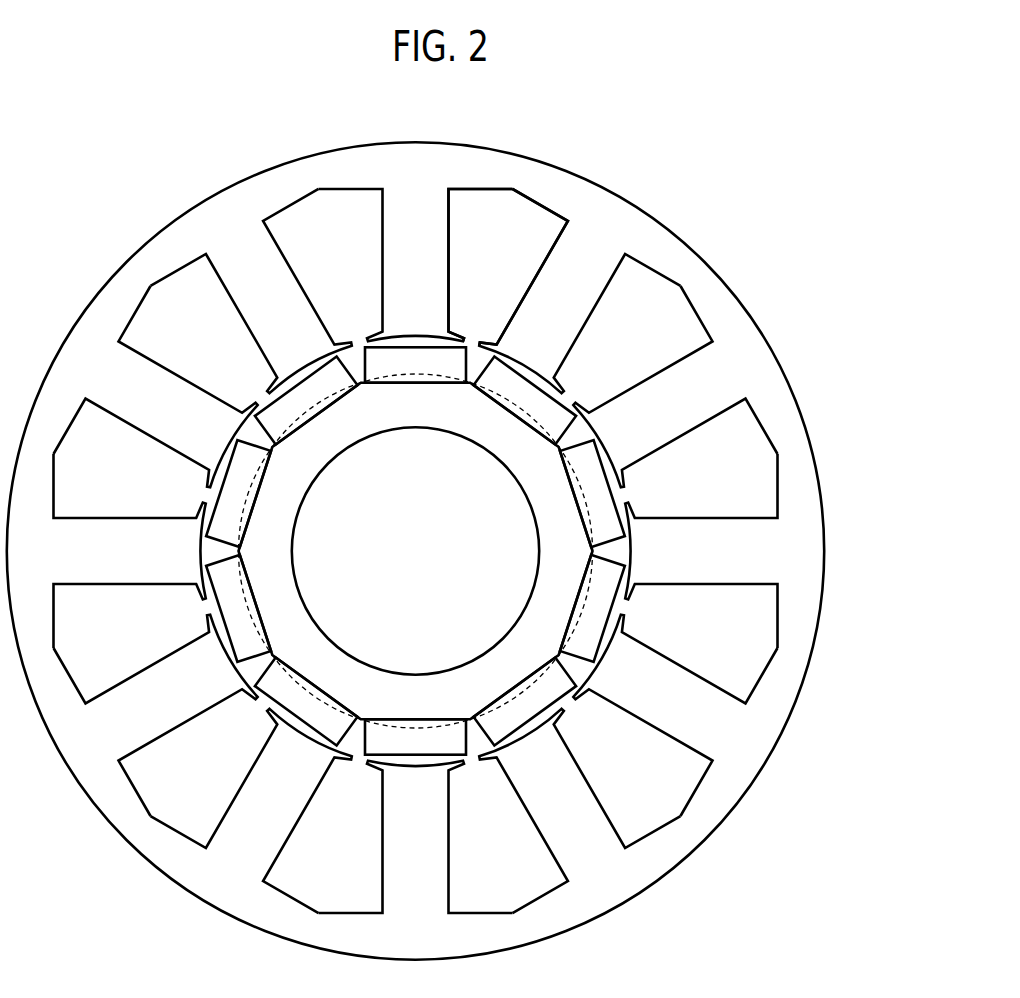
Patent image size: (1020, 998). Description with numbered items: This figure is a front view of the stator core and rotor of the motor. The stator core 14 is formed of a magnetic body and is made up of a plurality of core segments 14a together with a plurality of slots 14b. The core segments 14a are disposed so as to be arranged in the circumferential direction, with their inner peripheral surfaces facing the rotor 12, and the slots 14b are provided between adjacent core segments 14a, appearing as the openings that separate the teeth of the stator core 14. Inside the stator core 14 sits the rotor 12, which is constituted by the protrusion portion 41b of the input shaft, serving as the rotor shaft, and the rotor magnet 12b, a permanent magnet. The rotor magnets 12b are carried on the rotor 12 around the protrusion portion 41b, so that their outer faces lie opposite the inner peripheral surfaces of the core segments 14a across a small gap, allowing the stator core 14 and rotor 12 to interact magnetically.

The stator core 14 is at (658, 222).
The core segment 14a is at (412, 285).
The slot 14b is at (528, 228).
The rotor 12 is at (564, 543).
The protrusion portion 41b is at (550, 478).
The rotor magnet 12b is at (605, 520).